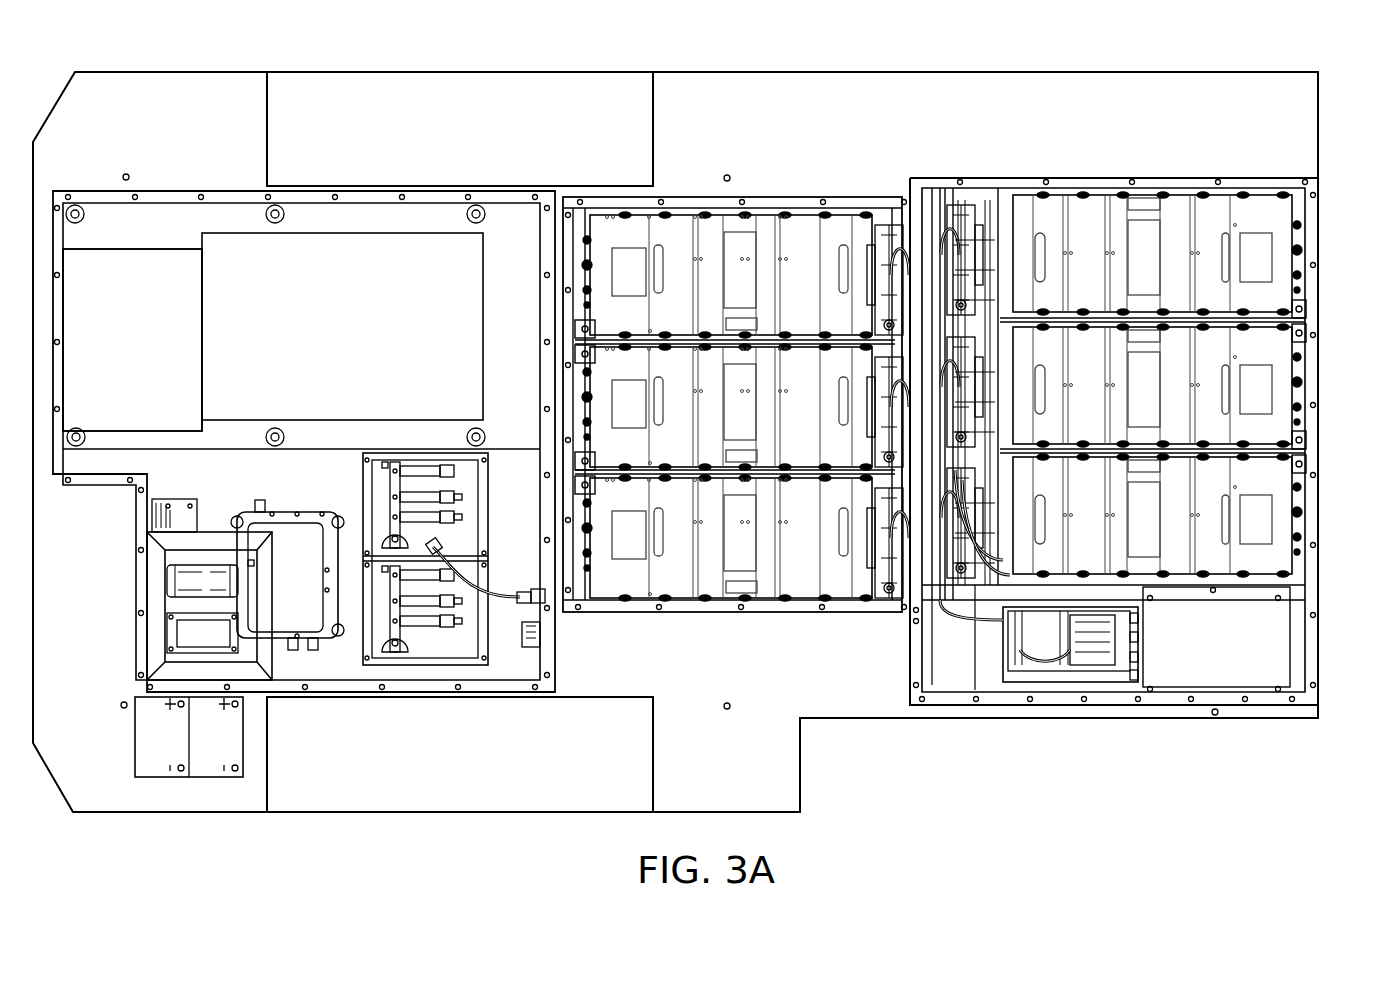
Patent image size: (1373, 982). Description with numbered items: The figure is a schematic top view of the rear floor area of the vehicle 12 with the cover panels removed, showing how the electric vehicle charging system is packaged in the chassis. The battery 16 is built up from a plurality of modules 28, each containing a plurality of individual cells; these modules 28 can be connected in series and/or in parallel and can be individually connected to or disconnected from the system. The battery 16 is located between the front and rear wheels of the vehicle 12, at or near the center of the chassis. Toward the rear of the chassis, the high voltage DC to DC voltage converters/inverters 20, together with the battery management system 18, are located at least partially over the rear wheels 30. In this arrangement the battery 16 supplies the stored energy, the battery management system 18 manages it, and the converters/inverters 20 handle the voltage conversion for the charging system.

The vehicle 12 is at (730, 72).
The battery 16 is at (801, 243).
The battery management system 18 is at (170, 282).
The DC to DC voltage converters/inverters 20 is at (170, 282).
The modules 28 is at (1225, 265).
The rear wheels 30 is at (465, 107).